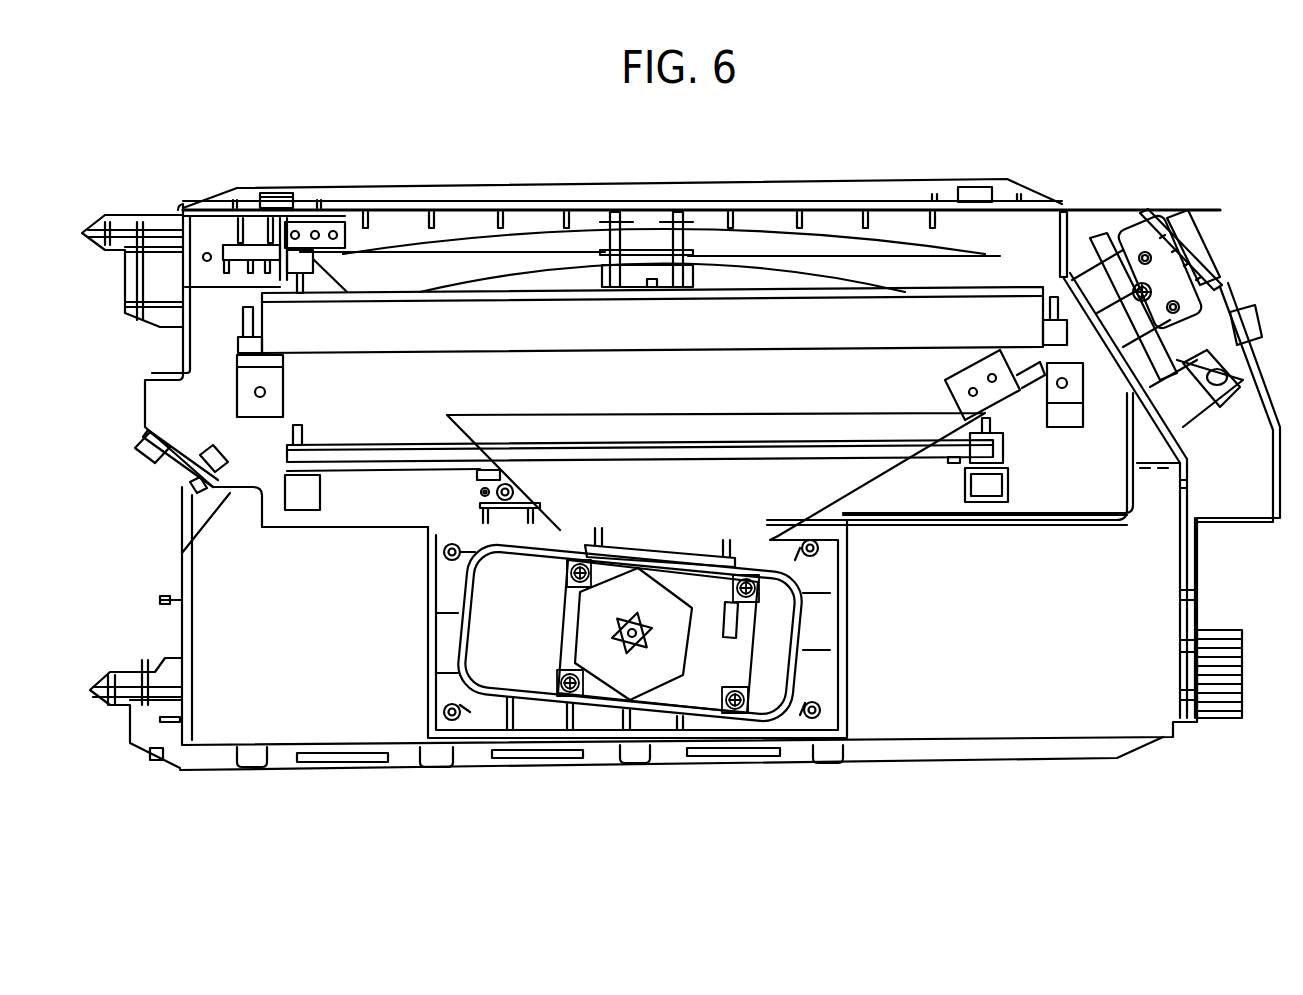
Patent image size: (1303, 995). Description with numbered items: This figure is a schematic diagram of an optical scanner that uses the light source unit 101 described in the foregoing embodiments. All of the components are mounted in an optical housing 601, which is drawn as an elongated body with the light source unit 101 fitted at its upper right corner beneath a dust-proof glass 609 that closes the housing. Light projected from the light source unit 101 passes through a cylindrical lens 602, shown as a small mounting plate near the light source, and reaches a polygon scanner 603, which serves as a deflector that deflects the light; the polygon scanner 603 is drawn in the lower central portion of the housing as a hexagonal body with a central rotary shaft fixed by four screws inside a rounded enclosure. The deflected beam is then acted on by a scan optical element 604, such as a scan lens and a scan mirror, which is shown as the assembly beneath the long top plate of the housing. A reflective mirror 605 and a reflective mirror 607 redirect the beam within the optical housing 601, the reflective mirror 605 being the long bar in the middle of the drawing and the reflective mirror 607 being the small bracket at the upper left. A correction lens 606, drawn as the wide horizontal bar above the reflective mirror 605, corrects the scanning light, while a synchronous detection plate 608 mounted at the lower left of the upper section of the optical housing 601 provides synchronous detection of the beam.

The light source unit 101 is at (1210, 300).
The optical housing 601 is at (990, 720).
The cylindrical lens 602 is at (1015, 350).
The polygon scanner 603 is at (583, 630).
The scan optical element 604 is at (787, 257).
The reflective mirror 605 is at (920, 452).
The correction lens 606 is at (415, 320).
The reflective mirror 607 is at (262, 248).
The synchronous detection plate 608 is at (170, 478).
The dust-proof glass 609 is at (1132, 210).